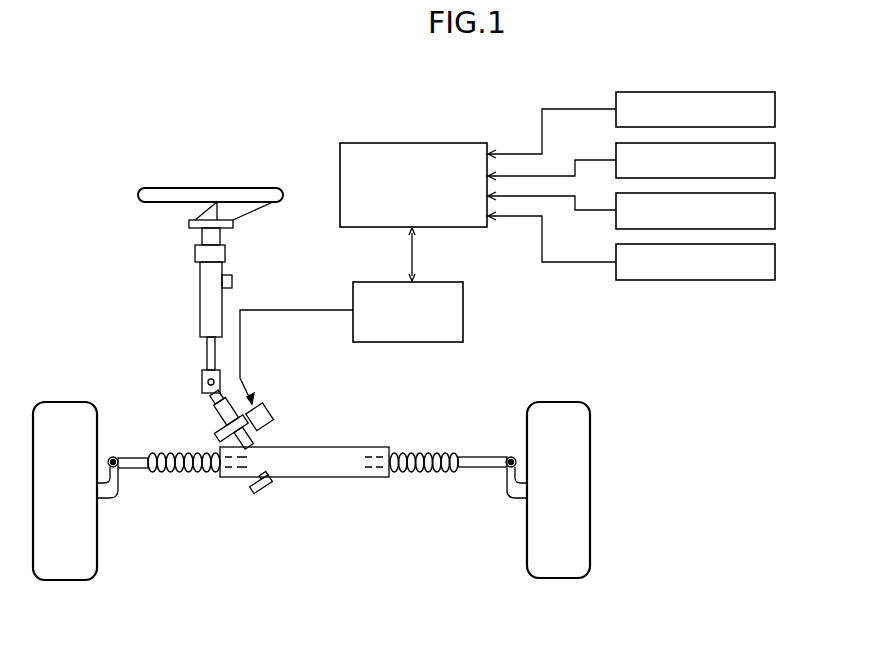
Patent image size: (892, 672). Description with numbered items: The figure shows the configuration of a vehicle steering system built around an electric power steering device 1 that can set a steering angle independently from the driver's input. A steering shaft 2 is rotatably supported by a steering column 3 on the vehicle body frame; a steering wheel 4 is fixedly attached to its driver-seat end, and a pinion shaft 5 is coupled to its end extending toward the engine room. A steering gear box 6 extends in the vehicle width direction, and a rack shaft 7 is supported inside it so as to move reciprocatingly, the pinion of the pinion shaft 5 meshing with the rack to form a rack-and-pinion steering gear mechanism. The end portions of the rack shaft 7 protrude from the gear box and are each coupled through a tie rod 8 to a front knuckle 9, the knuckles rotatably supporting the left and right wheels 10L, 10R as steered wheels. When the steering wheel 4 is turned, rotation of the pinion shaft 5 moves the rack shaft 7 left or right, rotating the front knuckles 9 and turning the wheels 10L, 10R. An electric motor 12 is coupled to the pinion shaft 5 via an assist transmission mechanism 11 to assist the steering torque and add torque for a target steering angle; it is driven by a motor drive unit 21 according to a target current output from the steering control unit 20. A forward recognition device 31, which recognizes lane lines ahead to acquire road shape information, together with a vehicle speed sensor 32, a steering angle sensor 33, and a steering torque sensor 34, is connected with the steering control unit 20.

The electric power steering device 1 is at (116, 331).
The steering shaft 2 is at (207, 357).
The steering column 3 is at (200, 297).
The steering wheel 4 is at (213, 186).
The pinion shaft 5 is at (212, 412).
The steering gear box 6 is at (327, 477).
The rack shaft 7 is at (375, 445).
The tie rod 8 is at (138, 469).
The front knuckle 9 is at (108, 493).
The right wheel 10R is at (65, 581).
The left wheel 10L is at (560, 579).
The assist transmission mechanism 11 is at (217, 437).
The electric motor 12 is at (273, 411).
The steering control unit 20 is at (412, 143).
The motor drive unit 21 is at (443, 282).
The forward recognition device 31 is at (775, 109).
The vehicle speed sensor 32 is at (775, 160).
The steering angle sensor 33 is at (775, 210).
The steering torque sensor 34 is at (775, 262).